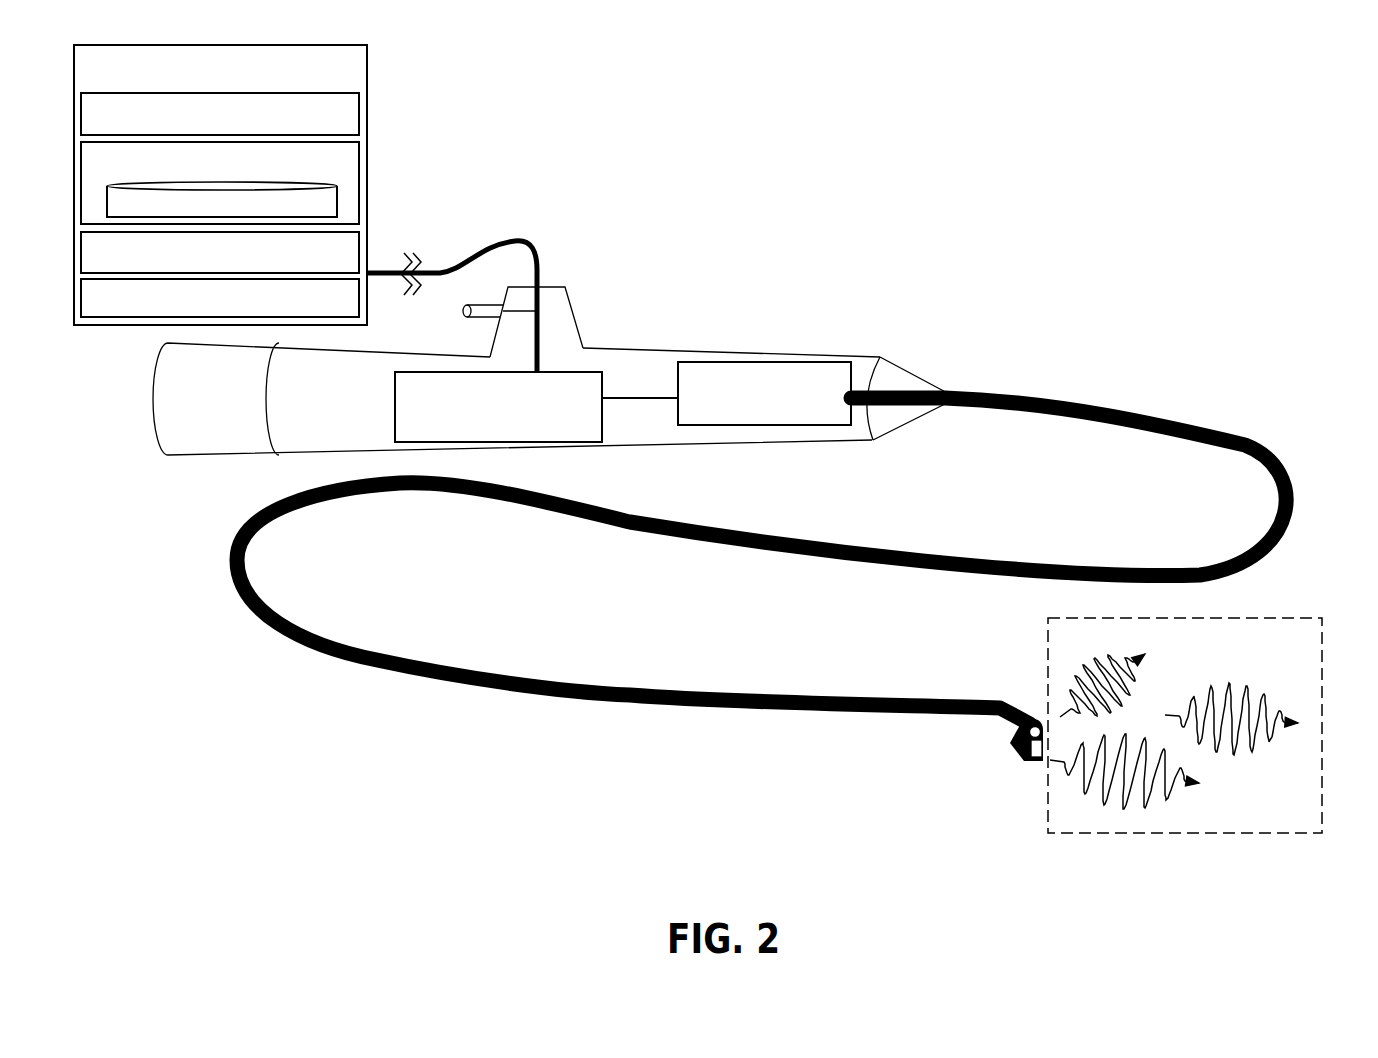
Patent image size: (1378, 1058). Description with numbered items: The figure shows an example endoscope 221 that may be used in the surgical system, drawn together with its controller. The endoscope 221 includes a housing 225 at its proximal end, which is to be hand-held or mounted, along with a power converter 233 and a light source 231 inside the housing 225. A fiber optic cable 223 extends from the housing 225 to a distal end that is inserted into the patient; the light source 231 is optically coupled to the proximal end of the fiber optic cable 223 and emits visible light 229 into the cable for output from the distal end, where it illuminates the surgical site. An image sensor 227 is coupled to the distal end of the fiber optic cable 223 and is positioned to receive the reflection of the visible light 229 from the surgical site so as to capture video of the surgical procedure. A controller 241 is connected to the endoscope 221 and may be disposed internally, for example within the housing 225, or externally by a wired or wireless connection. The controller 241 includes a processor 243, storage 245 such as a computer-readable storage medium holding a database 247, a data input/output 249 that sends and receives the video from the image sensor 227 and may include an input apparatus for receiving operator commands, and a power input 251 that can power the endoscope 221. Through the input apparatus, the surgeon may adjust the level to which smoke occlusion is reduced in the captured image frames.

The endoscope 221 is at (1125, 182).
The fiber optic cable 223 is at (1272, 408).
The housing 225 is at (803, 348).
The image sensor 227 is at (1037, 758).
The visible light 229 is at (1288, 664).
The light source 231 is at (782, 421).
The power converter 233 is at (582, 434).
The controller 241 is at (310, 84).
The processor 243 is at (304, 129).
The storage 245 is at (282, 174).
The database 247 is at (282, 216).
The data input/output 249 is at (345, 266).
The power input 251 is at (310, 314).